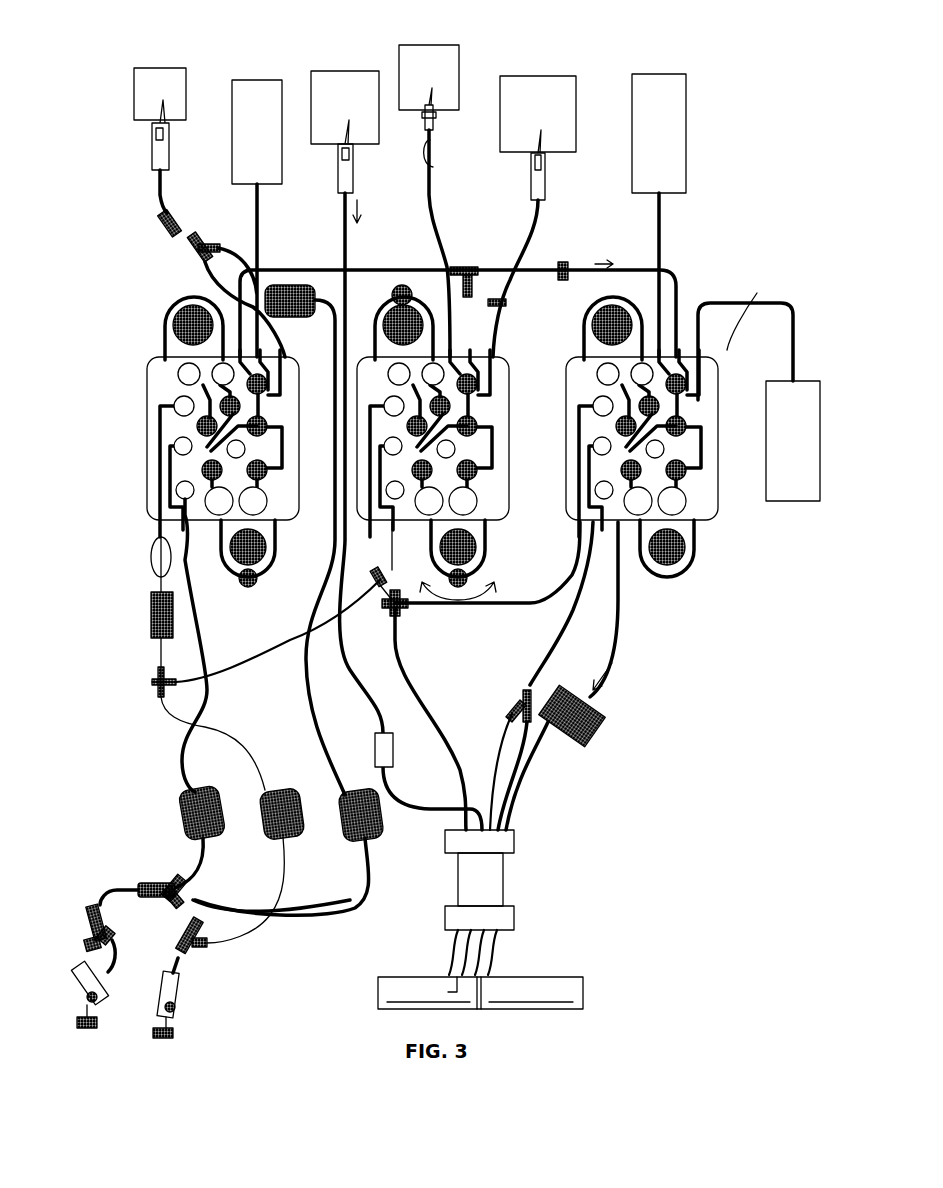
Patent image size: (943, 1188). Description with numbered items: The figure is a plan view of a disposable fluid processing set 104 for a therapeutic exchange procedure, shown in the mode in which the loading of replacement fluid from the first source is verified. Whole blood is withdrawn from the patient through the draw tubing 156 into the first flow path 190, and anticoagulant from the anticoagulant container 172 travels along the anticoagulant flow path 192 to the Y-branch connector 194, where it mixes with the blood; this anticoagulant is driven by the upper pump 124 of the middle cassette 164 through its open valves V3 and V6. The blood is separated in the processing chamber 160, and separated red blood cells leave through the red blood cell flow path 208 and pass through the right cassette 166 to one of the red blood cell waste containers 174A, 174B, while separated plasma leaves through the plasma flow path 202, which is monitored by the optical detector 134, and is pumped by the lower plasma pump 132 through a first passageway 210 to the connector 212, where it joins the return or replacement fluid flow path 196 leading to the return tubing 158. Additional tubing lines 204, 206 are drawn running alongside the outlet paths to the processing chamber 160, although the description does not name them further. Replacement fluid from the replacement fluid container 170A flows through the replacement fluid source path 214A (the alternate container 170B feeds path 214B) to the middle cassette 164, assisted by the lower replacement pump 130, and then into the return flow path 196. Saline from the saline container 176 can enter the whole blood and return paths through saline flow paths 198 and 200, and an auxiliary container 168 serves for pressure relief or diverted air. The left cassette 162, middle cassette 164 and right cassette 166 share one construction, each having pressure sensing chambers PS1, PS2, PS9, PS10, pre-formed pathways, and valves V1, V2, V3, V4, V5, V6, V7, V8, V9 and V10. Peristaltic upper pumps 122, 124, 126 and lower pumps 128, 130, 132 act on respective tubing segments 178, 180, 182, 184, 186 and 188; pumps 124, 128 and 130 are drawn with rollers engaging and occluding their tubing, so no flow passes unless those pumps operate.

The disposable fluid processing set 104 is at (748, 232).
The upper pump of left cassette 122 is at (173, 325).
The upper or anticoagulant pump of middle cassette 124 is at (385, 312).
The upper pump of right cassette 126 is at (598, 310).
The lower pump of left cassette 128 is at (266, 558).
The lower or replacement pump of middle cassette 130 is at (476, 548).
The lower or plasma pump of right cassette 132 is at (685, 548).
The optical detector 134 is at (598, 730).
The draw tubing 156 is at (117, 947).
The return tubing 158 is at (183, 967).
The processing chamber 160 is at (583, 992).
The left cassette 162 is at (295, 320).
The middle cassette 164 is at (506, 303).
The right cassette 166 is at (750, 309).
The auxiliary reservoir or container 168 is at (257, 80).
The replacement fluid container 170A is at (345, 71).
The replacement fluid container 170B is at (537, 76).
The anticoagulant container 172 is at (428, 45).
The red blood cell waste container 174A is at (659, 74).
The red blood cell waste container 174B is at (815, 381).
The saline container 176 is at (162, 68).
The tubing segment 178 is at (170, 320).
The tubing segment 180 is at (422, 300).
The tubing segment 182 is at (627, 300).
The tubing segment 184 is at (258, 583).
The tubing segment 186 is at (485, 580).
The tubing segment 188 is at (694, 572).
The first flow path 190 is at (410, 806).
The anticoagulant flow path 192 is at (432, 196).
The Y-branch connector 194 is at (158, 880).
The return or replacement fluid flow path 196 is at (290, 870).
The saline flow path 198 is at (200, 278).
The saline flow path 200 is at (210, 250).
The plasma flow path 202 is at (545, 760).
The fluid line 204 is at (515, 805).
The fluid line 206 is at (512, 820).
The red blood cell flow path 208 is at (442, 727).
The first passageway 210 is at (670, 272).
The connector 212 is at (466, 267).
The replacement fluid source path 214A is at (344, 233).
The replacement fluid source path 214B is at (538, 220).
The pressure sensing chamber PS1 is at (178, 372).
The pressure sensing chamber PS2 is at (212, 376).
The pressure sensing chamber PS9 is at (205, 502).
The pressure sensing chamber PS10 is at (240, 510).
The valve V1 is at (197, 426).
The valve V2 is at (240, 406).
The valve V3 is at (267, 384).
The valve V4 is at (245, 449).
The valve V5 is at (266, 472).
The valve V6 is at (162, 405).
The valve V7 is at (174, 446).
The valve V8 is at (176, 490).
The valve V9 is at (202, 470).
The valve V10 is at (200, 440).